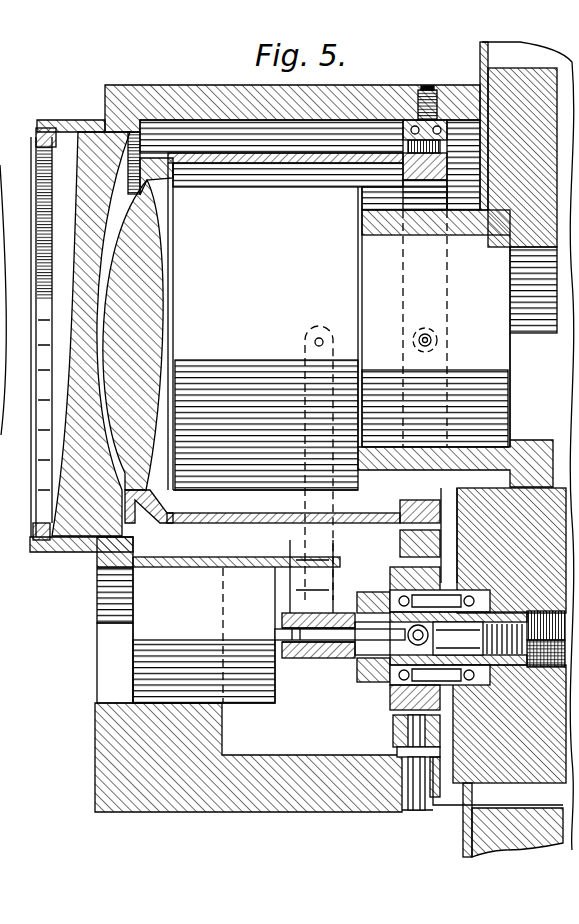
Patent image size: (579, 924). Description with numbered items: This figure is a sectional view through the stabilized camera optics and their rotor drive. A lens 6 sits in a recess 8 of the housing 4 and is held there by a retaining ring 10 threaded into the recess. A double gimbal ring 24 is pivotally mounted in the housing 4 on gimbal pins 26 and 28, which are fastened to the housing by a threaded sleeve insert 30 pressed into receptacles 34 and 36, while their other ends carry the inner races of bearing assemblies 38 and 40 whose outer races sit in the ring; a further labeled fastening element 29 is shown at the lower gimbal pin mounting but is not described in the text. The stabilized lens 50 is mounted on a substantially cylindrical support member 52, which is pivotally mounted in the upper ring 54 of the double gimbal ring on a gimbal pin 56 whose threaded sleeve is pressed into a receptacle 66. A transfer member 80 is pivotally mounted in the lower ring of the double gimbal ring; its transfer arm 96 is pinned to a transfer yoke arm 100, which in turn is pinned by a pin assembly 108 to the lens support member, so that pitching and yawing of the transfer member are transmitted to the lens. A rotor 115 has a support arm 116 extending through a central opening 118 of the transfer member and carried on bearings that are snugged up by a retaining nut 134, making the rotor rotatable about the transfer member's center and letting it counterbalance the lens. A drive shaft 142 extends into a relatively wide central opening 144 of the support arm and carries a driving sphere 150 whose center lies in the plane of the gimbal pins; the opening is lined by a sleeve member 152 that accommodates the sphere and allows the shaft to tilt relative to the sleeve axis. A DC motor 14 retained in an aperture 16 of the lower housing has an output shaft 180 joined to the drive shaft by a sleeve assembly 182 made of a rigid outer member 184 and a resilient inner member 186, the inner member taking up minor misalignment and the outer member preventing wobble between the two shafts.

The housing 4 is at (327, 88).
The lens 6 is at (88, 135).
The recess 8 is at (70, 125).
The retaining ring 10 is at (38, 134).
The DC motor 14 is at (145, 622).
The aperture 16 is at (107, 637).
The double gimbal ring 24 is at (444, 120).
The gimbal pin 26 is at (434, 97).
The gimbal pin 28 is at (418, 810).
The screw head 29 is at (402, 738).
The threaded sleeve insert 30 is at (416, 120).
The receptacle 34 is at (423, 88).
The receptacle 36 is at (408, 817).
The bearing assembly 38 is at (392, 143).
The bearing assembly 40 is at (400, 748).
The stabilized lens 50 is at (135, 457).
The support member 52 is at (200, 153).
The upper ring 54 is at (400, 140).
The gimbal pin 56 is at (437, 333).
The receptacle 66 is at (50, 448).
The transfer member 80 is at (392, 716).
The transfer arm 96 is at (302, 665).
The transfer yoke arm 100 is at (304, 548).
The pin assembly 108 is at (319, 338).
The rotor 115 is at (475, 507).
The support arm 116 is at (357, 663).
The central opening 118 is at (392, 700).
The retaining nut 134 is at (355, 675).
The drive shaft 142 is at (344, 632).
The central opening 144 is at (377, 600).
The driving sphere 150 is at (433, 635).
The sleeve member 152 is at (425, 671).
The output shaft 180 is at (278, 633).
The sleeve assembly 182 is at (285, 613).
The rigid outer member 184 is at (300, 578).
The inner member 186 is at (298, 665).